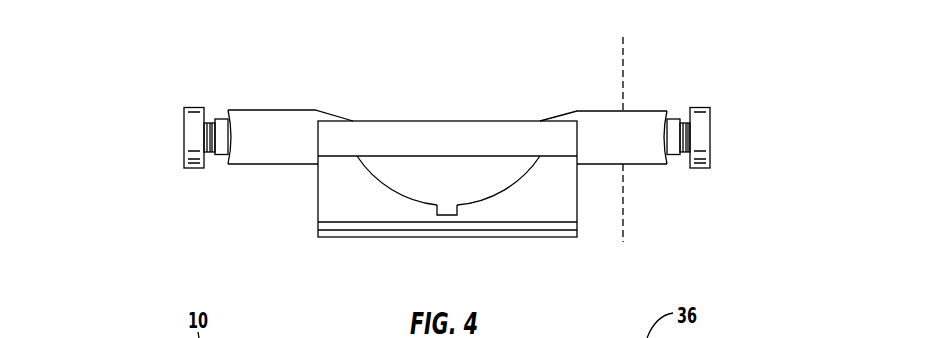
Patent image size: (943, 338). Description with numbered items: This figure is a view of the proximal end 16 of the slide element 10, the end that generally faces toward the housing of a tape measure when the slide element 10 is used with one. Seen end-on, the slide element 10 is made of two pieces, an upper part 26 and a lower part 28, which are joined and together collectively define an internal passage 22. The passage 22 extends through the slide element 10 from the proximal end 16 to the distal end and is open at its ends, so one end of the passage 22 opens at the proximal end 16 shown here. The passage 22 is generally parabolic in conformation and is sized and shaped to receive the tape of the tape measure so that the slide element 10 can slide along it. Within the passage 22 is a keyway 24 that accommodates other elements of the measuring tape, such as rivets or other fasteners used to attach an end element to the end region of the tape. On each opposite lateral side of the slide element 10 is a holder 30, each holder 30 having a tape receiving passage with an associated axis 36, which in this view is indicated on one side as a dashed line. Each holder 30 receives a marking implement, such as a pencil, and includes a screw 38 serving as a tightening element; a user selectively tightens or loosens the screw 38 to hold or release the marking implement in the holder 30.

The slide element 10 is at (244, 82).
The proximal end 16 is at (350, 207).
The internal passage 22 is at (472, 183).
The keyway 24 is at (437, 208).
The upper part 26 is at (407, 120).
The lower part 28 is at (318, 214).
The holder 30 is at (226, 104).
The axis 36 is at (623, 48).
The screw 38 is at (184, 124).